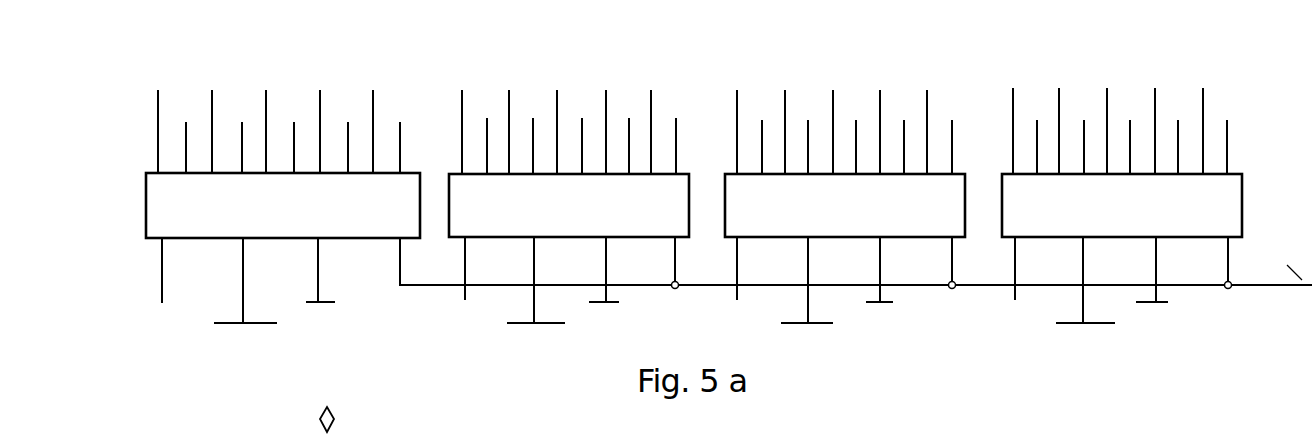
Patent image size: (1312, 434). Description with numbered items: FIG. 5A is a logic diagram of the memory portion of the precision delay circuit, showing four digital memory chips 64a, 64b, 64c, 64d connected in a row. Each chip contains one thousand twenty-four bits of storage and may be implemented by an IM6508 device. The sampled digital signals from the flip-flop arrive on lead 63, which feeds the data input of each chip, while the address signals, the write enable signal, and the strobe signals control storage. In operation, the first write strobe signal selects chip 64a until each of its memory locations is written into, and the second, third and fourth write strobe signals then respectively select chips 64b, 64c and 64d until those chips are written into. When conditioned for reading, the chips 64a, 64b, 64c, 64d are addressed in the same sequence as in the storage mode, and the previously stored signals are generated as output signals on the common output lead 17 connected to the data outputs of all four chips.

The lead 63 is at (162, 267).
The digital memory chip 64a is at (362, 238).
The digital memory chip 64b is at (690, 190).
The digital memory chip 64c is at (965, 190).
The digital memory chip 64d is at (1242, 188).
The lead 17 is at (1255, 285).